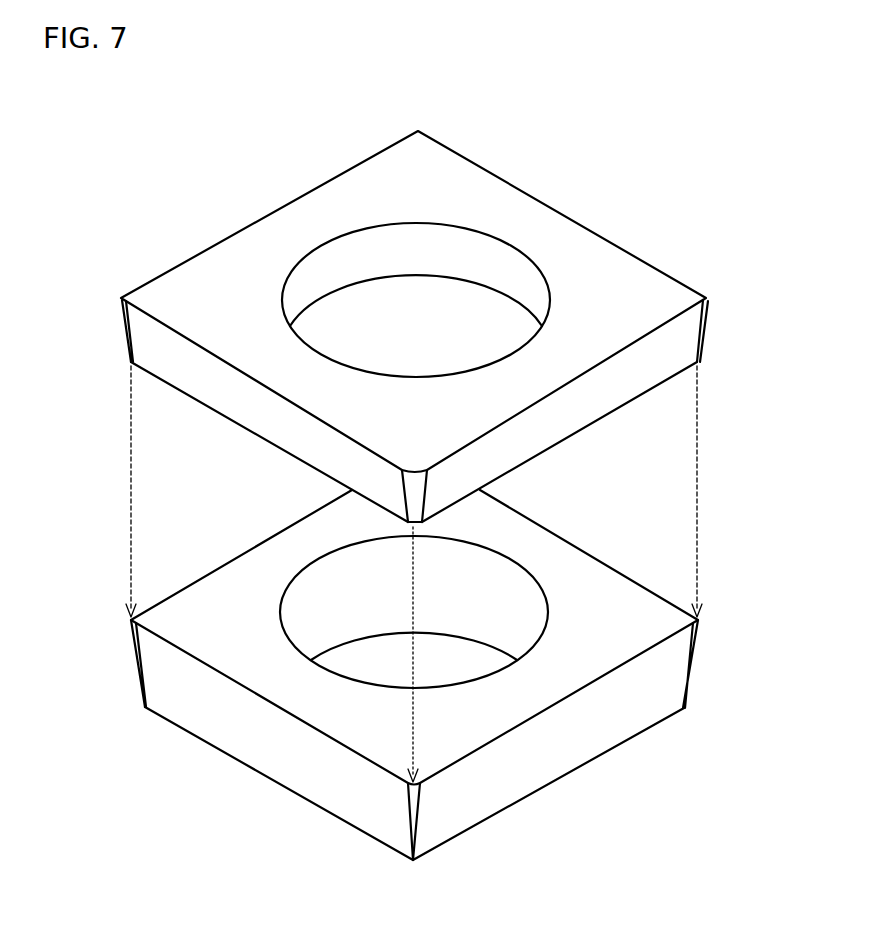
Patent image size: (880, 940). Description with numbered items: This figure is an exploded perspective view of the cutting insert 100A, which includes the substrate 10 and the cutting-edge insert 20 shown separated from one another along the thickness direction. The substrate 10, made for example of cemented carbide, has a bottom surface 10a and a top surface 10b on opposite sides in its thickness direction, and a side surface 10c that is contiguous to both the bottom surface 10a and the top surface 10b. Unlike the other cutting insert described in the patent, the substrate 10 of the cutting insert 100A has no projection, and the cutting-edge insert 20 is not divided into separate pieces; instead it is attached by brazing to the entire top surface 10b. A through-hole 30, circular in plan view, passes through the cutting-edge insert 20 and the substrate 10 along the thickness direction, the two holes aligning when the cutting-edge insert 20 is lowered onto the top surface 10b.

The cutting insert 100A is at (751, 193).
The substrate 10 is at (240, 774).
The bottom surface 10a is at (505, 812).
The top surface 10b is at (592, 583).
The side surface 10c is at (550, 748).
The cutting-edge insert 20 is at (188, 285).
The through-hole 30 is at (508, 268).